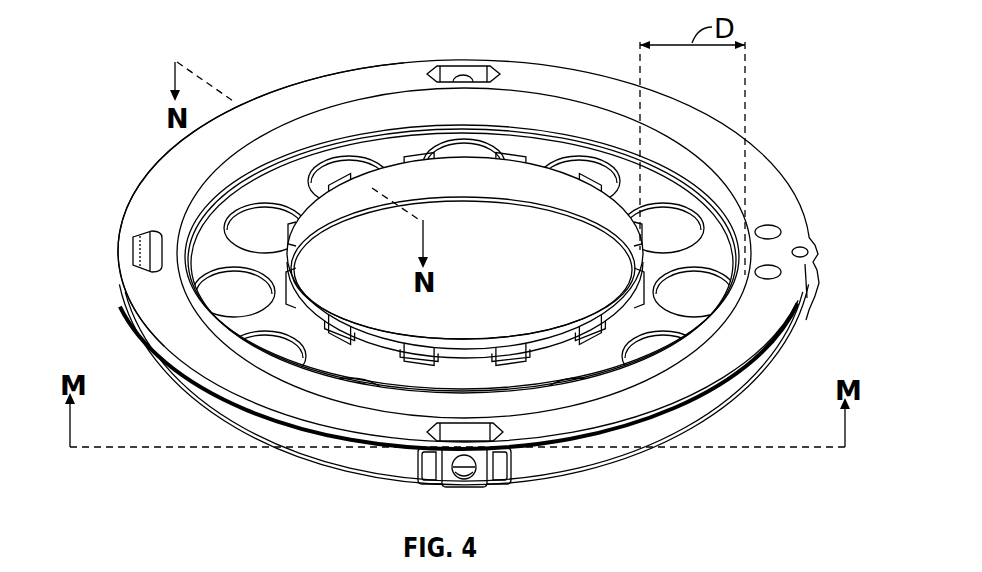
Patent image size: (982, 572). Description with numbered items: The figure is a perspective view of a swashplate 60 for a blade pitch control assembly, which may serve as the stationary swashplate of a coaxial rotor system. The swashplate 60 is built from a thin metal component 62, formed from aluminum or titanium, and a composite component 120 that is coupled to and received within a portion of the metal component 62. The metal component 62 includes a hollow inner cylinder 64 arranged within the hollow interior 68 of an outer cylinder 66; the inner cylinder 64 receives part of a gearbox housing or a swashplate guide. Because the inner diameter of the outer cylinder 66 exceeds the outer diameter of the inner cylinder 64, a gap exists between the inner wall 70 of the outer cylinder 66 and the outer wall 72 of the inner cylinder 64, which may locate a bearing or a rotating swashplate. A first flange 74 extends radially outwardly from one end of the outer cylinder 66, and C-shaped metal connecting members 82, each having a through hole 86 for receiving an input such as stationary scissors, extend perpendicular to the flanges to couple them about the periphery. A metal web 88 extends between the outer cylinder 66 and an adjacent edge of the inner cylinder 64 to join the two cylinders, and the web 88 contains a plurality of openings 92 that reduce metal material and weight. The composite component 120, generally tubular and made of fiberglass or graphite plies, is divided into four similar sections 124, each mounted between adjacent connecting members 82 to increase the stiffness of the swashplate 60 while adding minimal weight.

The swashplate 60 is at (142, 65).
The metal component 62 is at (774, 167).
The hollow inner cylinder 64 is at (553, 348).
The outer cylinder 66 is at (320, 123).
The hollow interior 68 is at (545, 133).
The inner wall 70 is at (530, 105).
The outer wall 72 is at (590, 213).
The first flange 74 is at (150, 185).
The connecting members 82 is at (430, 470).
The through hole 86 is at (480, 72).
The web 88 is at (313, 367).
The openings 92 is at (693, 293).
The composite component 120 is at (784, 329).
The sections 124 is at (183, 380).